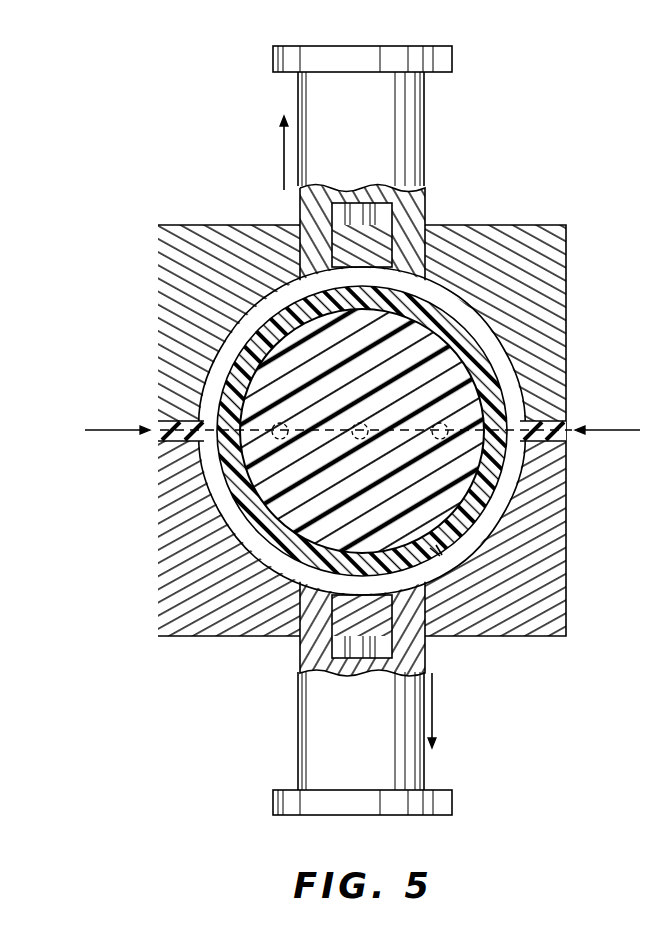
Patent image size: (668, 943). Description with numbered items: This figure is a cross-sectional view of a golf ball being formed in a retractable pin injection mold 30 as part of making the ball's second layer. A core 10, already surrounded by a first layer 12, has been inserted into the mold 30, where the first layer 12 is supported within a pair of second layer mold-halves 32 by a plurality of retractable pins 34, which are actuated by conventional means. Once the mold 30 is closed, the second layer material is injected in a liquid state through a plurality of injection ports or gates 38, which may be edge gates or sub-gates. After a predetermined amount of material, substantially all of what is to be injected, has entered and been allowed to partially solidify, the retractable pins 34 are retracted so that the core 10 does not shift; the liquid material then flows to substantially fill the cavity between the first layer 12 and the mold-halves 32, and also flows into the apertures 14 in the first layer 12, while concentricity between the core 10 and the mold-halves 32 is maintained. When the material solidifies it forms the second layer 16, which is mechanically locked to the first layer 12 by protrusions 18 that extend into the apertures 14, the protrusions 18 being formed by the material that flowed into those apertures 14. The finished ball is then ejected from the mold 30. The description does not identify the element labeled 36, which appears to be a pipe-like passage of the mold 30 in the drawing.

The core 10 is at (467, 449).
The first layer 12 is at (493, 473).
The apertures 14 is at (480, 538).
The second layer 16 is at (497, 517).
The protrusions 18 is at (440, 556).
The retractable pin injection mold 30 is at (225, 191).
The second layer mold-halves 32 is at (530, 225).
The retractable pins 34 is at (418, 212).
The pipe 36 is at (297, 723).
The injection ports or gates 38 is at (567, 422).